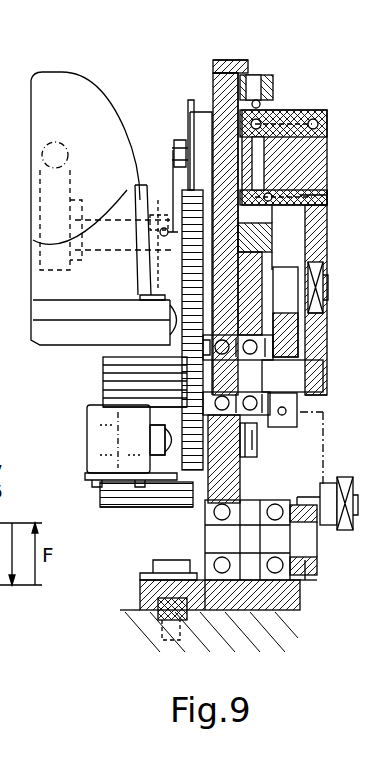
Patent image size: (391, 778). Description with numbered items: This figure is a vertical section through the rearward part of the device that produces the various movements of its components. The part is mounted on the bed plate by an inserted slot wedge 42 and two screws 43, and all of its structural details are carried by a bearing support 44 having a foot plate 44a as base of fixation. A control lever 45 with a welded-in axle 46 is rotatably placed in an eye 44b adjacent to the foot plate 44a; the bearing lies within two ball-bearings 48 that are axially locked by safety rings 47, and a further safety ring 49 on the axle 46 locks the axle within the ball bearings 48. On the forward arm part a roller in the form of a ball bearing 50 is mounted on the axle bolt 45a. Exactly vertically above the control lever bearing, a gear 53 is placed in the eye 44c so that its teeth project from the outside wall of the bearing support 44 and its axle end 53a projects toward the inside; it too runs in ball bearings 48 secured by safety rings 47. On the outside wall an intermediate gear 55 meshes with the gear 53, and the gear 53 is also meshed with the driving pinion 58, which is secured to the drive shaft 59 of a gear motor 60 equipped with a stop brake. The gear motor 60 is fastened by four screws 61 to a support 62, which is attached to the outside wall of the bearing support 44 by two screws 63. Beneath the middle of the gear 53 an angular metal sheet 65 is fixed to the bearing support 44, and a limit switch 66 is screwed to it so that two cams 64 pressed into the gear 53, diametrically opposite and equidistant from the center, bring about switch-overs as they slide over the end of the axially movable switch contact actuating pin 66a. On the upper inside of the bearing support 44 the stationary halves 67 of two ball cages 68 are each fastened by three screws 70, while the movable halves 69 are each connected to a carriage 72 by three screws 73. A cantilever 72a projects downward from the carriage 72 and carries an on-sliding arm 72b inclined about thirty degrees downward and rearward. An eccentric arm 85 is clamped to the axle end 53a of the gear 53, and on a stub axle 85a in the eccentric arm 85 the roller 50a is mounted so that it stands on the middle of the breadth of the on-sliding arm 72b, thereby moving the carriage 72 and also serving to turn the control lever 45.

The gear motor 60 is at (56, 80).
The screws 61 is at (131, 195).
The drive shaft 59 is at (152, 205).
The driving pinion 58 is at (181, 140).
The screws 63 is at (187, 190).
The support 62 is at (77, 337).
The screws 70 is at (229, 100).
The bearing support 44 is at (248, 65).
The stationary halves 67 is at (275, 91).
The movable halves 69 is at (262, 194).
The carriage 72 is at (318, 175).
The screws 73 is at (327, 198).
The ball cage 68 is at (303, 220).
The cantilever 72a is at (318, 244).
The on-sliding arm 72b is at (318, 362).
The stub axle 85a is at (336, 295).
The roller 50a is at (323, 311).
The eccentric arm 85 is at (292, 338).
The axle end 53a is at (290, 381).
The ball bearings 48 is at (275, 403).
The safety rings 47 is at (286, 412).
The eye 44c is at (255, 438).
The eye 44b is at (291, 505).
The axle 46 is at (291, 585).
The ball bearing 50 is at (336, 518).
The axle bolt 45a is at (318, 558).
The control lever 45 is at (305, 572).
The slot wedge 42 is at (176, 618).
The screws 43 is at (155, 574).
The foot plate 44a is at (152, 599).
The safety ring 49 is at (206, 612).
The intermediate gear 55 is at (105, 380).
The gear 53 is at (177, 388).
The limit switch 66 is at (88, 445).
The switch contact actuating pin 66a is at (165, 441).
The cams 64 is at (172, 498).
The angular metal sheet 65 is at (173, 455).